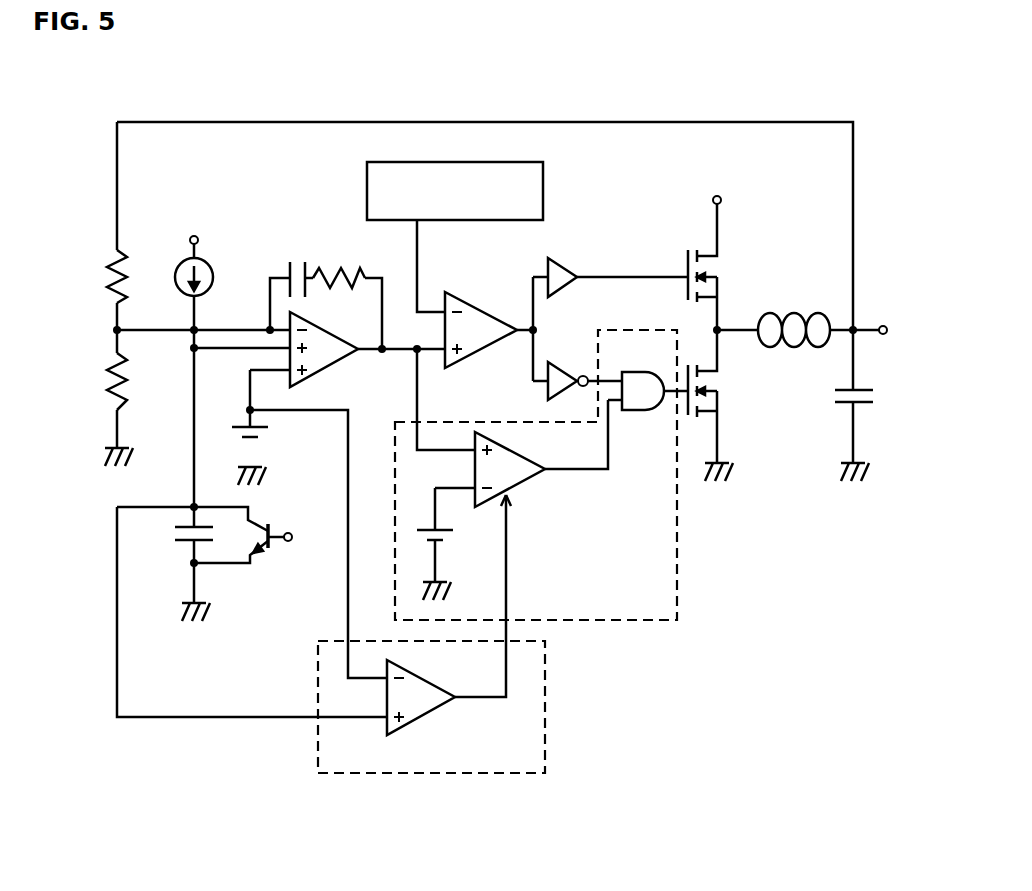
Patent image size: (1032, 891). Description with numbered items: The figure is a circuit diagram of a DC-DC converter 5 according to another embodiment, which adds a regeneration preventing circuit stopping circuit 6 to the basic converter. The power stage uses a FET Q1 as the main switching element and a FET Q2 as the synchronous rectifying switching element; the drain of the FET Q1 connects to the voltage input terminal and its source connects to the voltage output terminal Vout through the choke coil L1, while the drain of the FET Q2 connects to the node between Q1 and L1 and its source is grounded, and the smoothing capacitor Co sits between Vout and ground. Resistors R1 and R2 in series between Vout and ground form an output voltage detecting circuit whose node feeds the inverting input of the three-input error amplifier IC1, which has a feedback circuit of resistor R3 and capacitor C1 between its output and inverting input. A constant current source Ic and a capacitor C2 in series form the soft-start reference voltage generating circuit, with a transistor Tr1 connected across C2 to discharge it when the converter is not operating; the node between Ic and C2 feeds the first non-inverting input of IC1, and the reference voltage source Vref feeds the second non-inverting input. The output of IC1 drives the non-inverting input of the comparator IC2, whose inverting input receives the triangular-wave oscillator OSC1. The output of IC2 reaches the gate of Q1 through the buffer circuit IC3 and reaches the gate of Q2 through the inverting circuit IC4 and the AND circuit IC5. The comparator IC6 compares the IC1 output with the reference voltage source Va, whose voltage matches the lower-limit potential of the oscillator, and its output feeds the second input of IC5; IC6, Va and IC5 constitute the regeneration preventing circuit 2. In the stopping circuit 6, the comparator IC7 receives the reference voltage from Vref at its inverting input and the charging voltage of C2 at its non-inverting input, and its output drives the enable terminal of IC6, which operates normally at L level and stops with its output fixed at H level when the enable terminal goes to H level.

The DC-DC converter 5 is at (581, 118).
The regeneration preventing circuit 2 is at (677, 545).
The regeneration preventing circuit stopping circuit 6 is at (545, 700).
The resistor R1 is at (91, 276).
The resistor R2 is at (91, 381).
The resistor R3 is at (339, 261).
The capacitor C1 is at (295, 265).
The capacitor C2 is at (173, 540).
The smoothing capacitor Co is at (875, 399).
The choke coil L1 is at (794, 316).
The FET Q1 is at (723, 238).
The FET Q2 is at (723, 389).
The transistor Tr1 is at (276, 552).
The constant current source Ic is at (204, 255).
The reference voltage source Vref is at (270, 444).
The reference voltage source Va is at (448, 547).
The voltage output terminal Vout is at (890, 318).
The triangular-wave oscillator OSC1 is at (514, 180).
The error amplifier IC1 is at (327, 357).
The comparator IC2 is at (481, 324).
The buffer circuit IC3 is at (561, 264).
The inverting circuit IC4 is at (565, 368).
The AND circuit IC5 is at (640, 376).
The comparator IC6 is at (514, 472).
The comparator IC7 is at (421, 706).